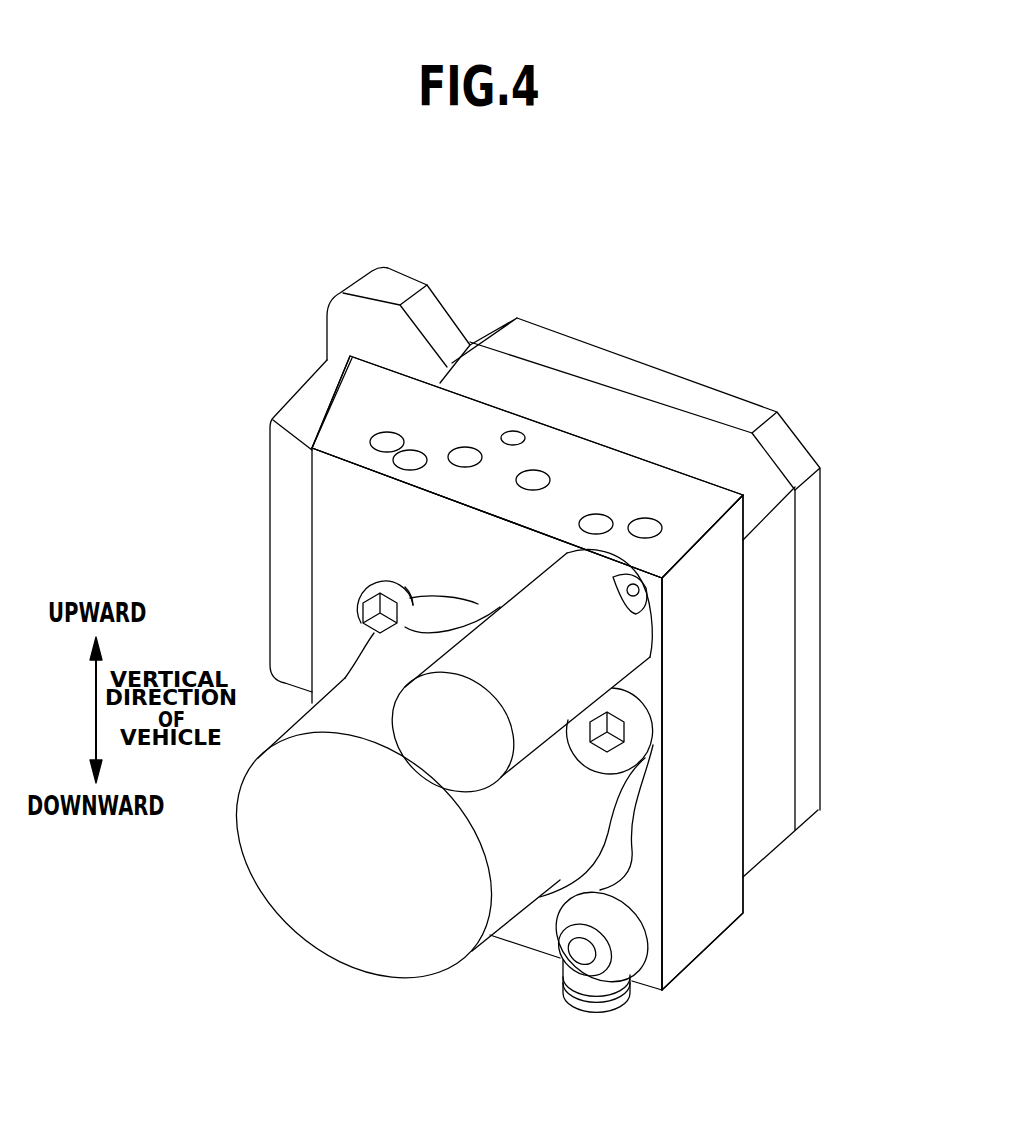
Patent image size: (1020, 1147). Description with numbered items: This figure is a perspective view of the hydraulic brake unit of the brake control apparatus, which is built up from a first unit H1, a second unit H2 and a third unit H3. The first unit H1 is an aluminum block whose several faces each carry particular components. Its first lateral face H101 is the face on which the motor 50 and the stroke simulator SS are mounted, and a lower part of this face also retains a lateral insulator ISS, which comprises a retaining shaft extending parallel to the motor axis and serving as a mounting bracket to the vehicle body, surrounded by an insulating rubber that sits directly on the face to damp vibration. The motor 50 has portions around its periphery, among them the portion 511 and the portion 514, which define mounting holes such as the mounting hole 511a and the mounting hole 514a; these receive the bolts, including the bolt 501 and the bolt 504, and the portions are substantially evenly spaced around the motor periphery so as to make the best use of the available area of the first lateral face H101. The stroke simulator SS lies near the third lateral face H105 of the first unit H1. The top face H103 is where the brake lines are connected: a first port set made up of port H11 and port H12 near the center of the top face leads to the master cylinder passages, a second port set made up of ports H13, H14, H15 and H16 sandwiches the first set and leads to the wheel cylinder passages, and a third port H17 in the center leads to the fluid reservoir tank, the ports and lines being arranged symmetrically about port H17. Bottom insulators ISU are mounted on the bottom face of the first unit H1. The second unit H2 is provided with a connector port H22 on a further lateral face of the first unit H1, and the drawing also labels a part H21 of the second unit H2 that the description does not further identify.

The first unit H1 is at (328, 469).
The first lateral face H101 is at (650, 882).
The top face H103 is at (685, 507).
The third lateral face H105 is at (700, 928).
The port H11 is at (465, 455).
The port H12 is at (535, 480).
The port H13 is at (598, 523).
The port H14 is at (648, 527).
The port H15 is at (410, 465).
The port H16 is at (375, 443).
The port H17 is at (515, 438).
The second unit H2 is at (773, 633).
The upper mounting tab of bracket H21 is at (368, 293).
The connector port H22 is at (287, 442).
The third unit H3 is at (803, 543).
The motor 50 is at (437, 970).
The bolt 501 is at (625, 780).
The bolt 504 is at (367, 620).
The portion 511 is at (638, 713).
The mounting hole 511a is at (604, 748).
The portion 514 is at (390, 582).
The mounting hole 514a is at (400, 582).
The stroke simulator SS is at (523, 592).
The lateral insulator ISS is at (637, 940).
The bottom insulator ISU is at (600, 1013).